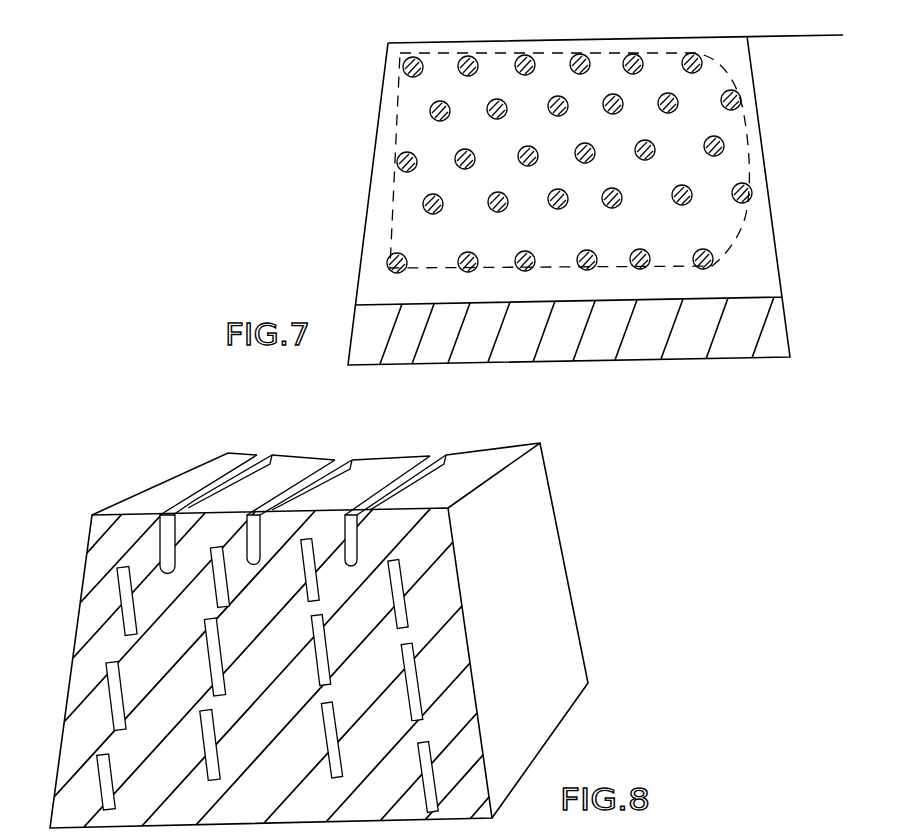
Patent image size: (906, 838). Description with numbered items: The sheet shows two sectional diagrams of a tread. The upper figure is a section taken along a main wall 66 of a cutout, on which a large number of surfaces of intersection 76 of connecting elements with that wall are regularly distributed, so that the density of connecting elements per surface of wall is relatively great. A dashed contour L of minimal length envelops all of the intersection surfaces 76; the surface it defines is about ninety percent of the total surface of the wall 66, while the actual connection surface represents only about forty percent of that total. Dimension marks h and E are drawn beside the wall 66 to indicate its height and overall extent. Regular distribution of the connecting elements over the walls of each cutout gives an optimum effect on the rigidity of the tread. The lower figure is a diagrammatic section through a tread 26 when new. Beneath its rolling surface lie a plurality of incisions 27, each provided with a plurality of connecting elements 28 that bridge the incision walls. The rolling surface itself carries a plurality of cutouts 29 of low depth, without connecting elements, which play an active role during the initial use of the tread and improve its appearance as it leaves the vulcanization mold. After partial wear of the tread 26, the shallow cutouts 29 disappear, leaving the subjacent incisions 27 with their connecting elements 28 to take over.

In FIG. 7, the main wall 66 is at (768, 278).
In FIG. 7, the surfaces of intersection 76 is at (577, 257).
In FIG. 7, the contour L is at (387, 218).
In FIG. 7, the height dimension h is at (808, 295).
In FIG. 7, the thickness dimension E is at (822, 35).
In FIG. 8, the tread 26 is at (533, 625).
In FIG. 8, the incisions 27 is at (203, 652).
In FIG. 8, the connecting elements 28 is at (420, 729).
In FIG. 8, the cutouts 29 is at (397, 475).